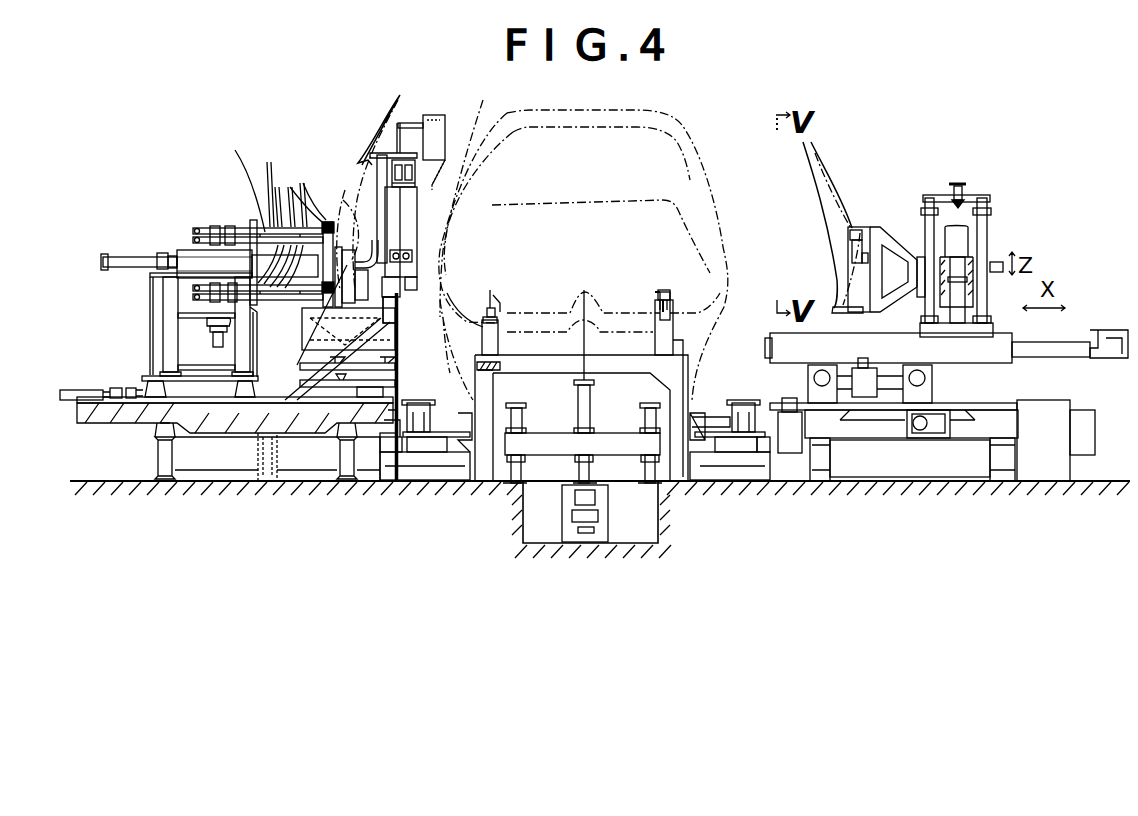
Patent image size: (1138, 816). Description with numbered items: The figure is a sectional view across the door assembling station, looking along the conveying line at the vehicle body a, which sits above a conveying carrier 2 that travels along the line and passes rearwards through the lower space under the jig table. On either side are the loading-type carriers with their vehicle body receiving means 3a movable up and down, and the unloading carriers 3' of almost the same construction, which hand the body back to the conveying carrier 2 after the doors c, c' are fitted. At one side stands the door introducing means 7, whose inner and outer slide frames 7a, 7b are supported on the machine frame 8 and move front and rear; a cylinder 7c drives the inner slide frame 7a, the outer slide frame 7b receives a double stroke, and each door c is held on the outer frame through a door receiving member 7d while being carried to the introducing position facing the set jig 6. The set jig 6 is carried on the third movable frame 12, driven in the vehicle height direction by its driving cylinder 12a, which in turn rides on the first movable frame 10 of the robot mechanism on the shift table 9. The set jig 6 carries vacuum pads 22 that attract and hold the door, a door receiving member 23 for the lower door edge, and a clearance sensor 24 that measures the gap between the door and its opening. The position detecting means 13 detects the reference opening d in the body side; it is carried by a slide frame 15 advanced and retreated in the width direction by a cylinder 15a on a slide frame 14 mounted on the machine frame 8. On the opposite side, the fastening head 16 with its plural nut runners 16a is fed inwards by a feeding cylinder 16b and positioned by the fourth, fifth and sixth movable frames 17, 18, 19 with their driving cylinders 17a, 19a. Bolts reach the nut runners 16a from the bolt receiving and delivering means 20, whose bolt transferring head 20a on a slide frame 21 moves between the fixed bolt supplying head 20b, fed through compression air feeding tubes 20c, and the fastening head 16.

The conveying carrier 2 is at (547, 446).
The unloading carrier 3' is at (584, 459).
The vehicle body receiving means 3a is at (458, 413).
The set jig 6 is at (877, 227).
The door introducing means 7 is at (367, 174).
The inner side slide frame 7a is at (400, 205).
The outer side slide frame 7b is at (410, 233).
The cylinder 7c is at (407, 148).
The door receiving member 7d is at (440, 252).
The machine frame 8 is at (443, 247).
The shift table 9 is at (973, 417).
The first movable frame 10 is at (953, 355).
The third movable frame 12 is at (924, 253).
The driving cylinder 12a is at (960, 307).
The position detecting means 13 is at (457, 277).
The slide frame 14 is at (387, 363).
The slide frame 15 is at (397, 320).
The cylinder 15a is at (395, 338).
The fastening head 16 is at (183, 250).
The nut runners 16a is at (264, 237).
The feeding cylinder 16b is at (117, 256).
The fourth movable frame 17 is at (143, 403).
The driving cylinder 17a is at (68, 390).
The fifth movable frame 18 is at (150, 376).
The sixth movable frame 19 is at (152, 308).
The driving cylinder 19a is at (218, 348).
The bolt receiving and delivering means 20 is at (333, 218).
The bolt transferring head 20a is at (305, 357).
The bolt supplying head 20b is at (265, 232).
The compression air feeding tubes 20c is at (268, 162).
The slide frame 21 is at (345, 210).
The vacuum pads 22 is at (852, 253).
The door receiving member 23 is at (838, 312).
The clearance sensor 24 is at (852, 232).
The vehicle body a is at (700, 185).
The rear door c is at (817, 155).
The reference opening d is at (457, 290).